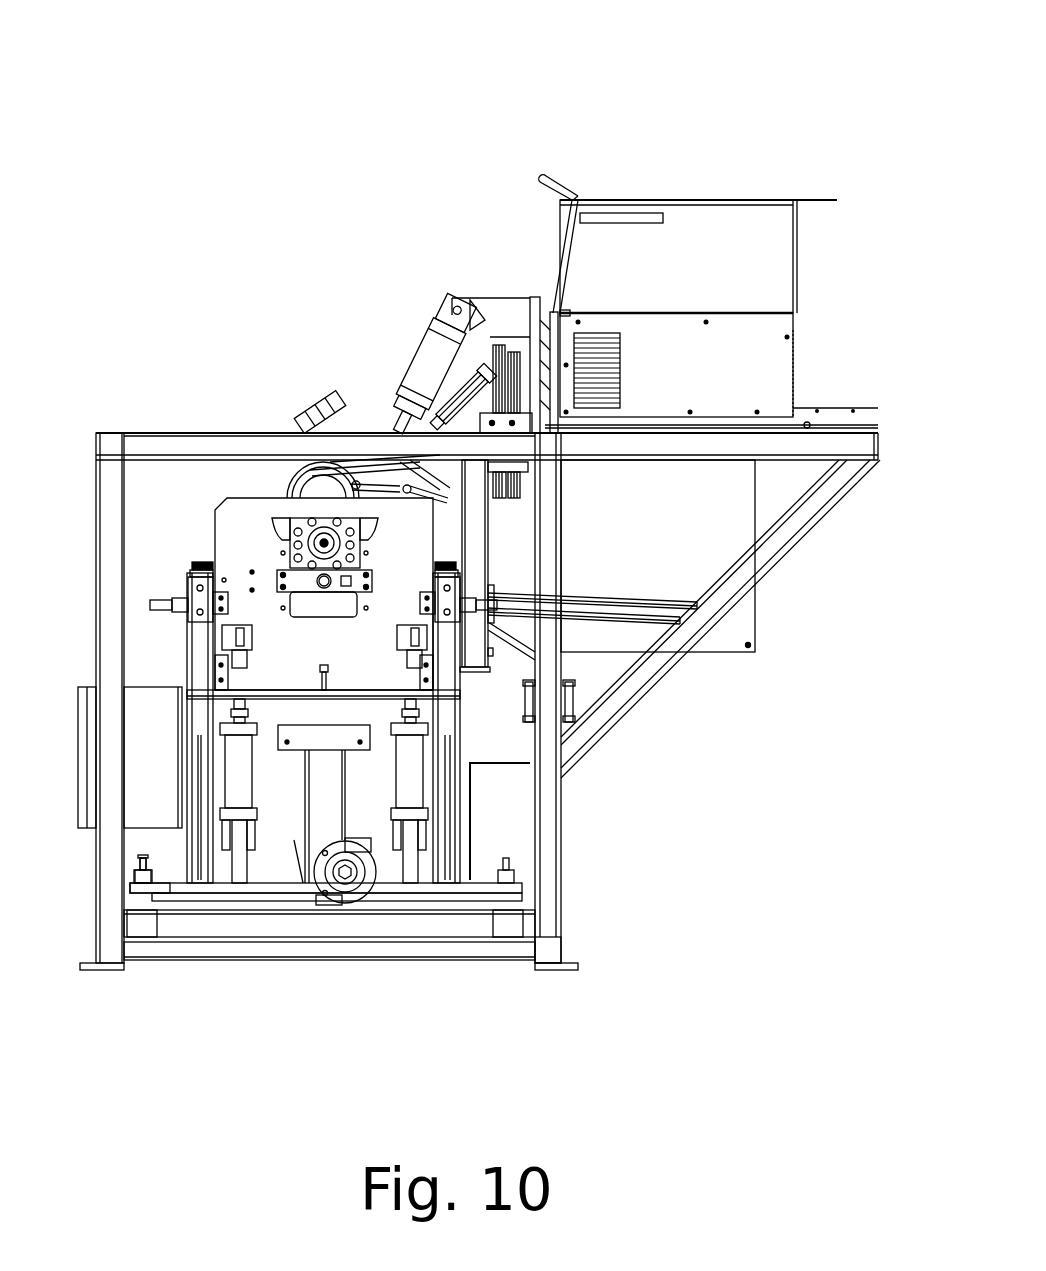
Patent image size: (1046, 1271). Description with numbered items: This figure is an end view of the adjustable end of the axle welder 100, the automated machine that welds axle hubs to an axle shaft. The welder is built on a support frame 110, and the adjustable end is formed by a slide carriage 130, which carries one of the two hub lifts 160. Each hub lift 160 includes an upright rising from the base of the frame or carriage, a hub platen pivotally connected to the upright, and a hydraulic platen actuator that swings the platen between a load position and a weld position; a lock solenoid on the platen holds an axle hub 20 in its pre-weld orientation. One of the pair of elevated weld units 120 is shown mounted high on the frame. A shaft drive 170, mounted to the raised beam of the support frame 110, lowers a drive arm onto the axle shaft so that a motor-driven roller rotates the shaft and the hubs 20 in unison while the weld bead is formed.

The axle welder 100 is at (752, 92).
The support frame 110 is at (561, 855).
The elevated weld unit 120 is at (738, 218).
The slide carriage 130 is at (170, 883).
The hub lift 160 is at (246, 515).
The shaft drive 170 is at (424, 358).
The axle hub 20 is at (303, 478).